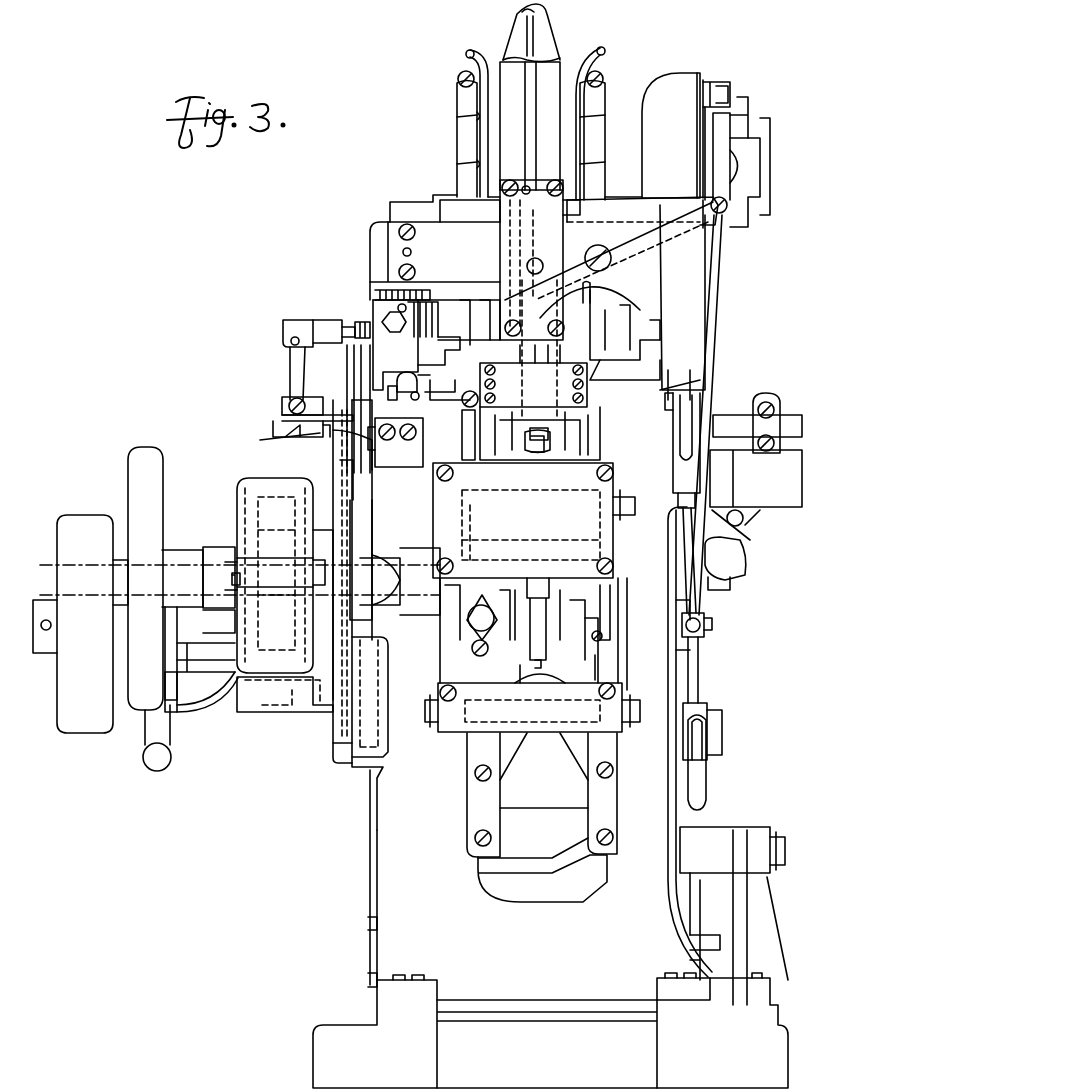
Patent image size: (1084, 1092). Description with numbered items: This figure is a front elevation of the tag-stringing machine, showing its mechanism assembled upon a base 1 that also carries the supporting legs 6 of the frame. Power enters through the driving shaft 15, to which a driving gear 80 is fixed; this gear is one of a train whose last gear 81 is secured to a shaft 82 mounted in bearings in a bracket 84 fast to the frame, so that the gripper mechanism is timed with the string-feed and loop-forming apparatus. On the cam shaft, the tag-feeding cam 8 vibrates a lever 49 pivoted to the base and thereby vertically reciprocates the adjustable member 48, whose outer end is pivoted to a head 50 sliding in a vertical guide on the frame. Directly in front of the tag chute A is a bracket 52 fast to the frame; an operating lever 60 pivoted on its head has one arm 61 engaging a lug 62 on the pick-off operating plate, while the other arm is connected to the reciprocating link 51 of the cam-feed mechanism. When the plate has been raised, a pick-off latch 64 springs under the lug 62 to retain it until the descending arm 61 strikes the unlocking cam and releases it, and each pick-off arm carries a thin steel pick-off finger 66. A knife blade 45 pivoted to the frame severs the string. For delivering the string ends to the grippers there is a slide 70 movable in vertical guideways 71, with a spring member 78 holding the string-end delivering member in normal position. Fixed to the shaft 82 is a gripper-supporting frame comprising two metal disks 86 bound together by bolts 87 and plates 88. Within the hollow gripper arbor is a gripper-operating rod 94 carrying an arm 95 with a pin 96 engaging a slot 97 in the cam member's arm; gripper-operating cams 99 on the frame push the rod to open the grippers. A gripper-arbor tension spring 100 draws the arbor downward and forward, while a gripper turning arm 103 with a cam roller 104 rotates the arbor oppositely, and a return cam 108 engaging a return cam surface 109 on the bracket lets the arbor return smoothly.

The tag chute A is at (496, 25).
The base 1 is at (550, 929).
The supporting legs 6 is at (680, 733).
The tag-feeding cam 8 is at (542, 870).
The driving shaft 15 is at (40, 645).
The knife blade 45 is at (743, 415).
The adjustable member 48 is at (700, 663).
The lever 49 is at (712, 825).
The head 50 is at (682, 356).
The reciprocating link 51 is at (716, 345).
The bracket 52 is at (456, 295).
The operating lever 60 is at (675, 225).
The arm of operating lever 61 is at (580, 270).
The lug 62 is at (525, 293).
The pick-off latch 64 is at (503, 244).
The pick-off finger 66 is at (533, 376).
The slide 70 is at (568, 668).
The vertical guideways 71 is at (543, 795).
The spring member 78 is at (537, 603).
The driving gear 80 is at (277, 680).
The last gear of train 81 is at (240, 565).
The shaft 82 is at (376, 581).
The bracket 84 is at (332, 745).
The metal disks 86 is at (602, 636).
The bolts 87 is at (485, 505).
The plates 88 is at (570, 557).
The gripper-operating rod 94 is at (363, 437).
The arm 95 is at (538, 445).
The pin 96 is at (533, 432).
The slot 97 is at (537, 430).
The gripper-operating cams 99 is at (360, 490).
The gripper-arbor tension spring 100 is at (474, 393).
The gripper turning arm 103 is at (413, 402).
The cam roller 104 is at (417, 398).
The return cam 108 is at (376, 384).
The return cam surface 109 is at (380, 745).